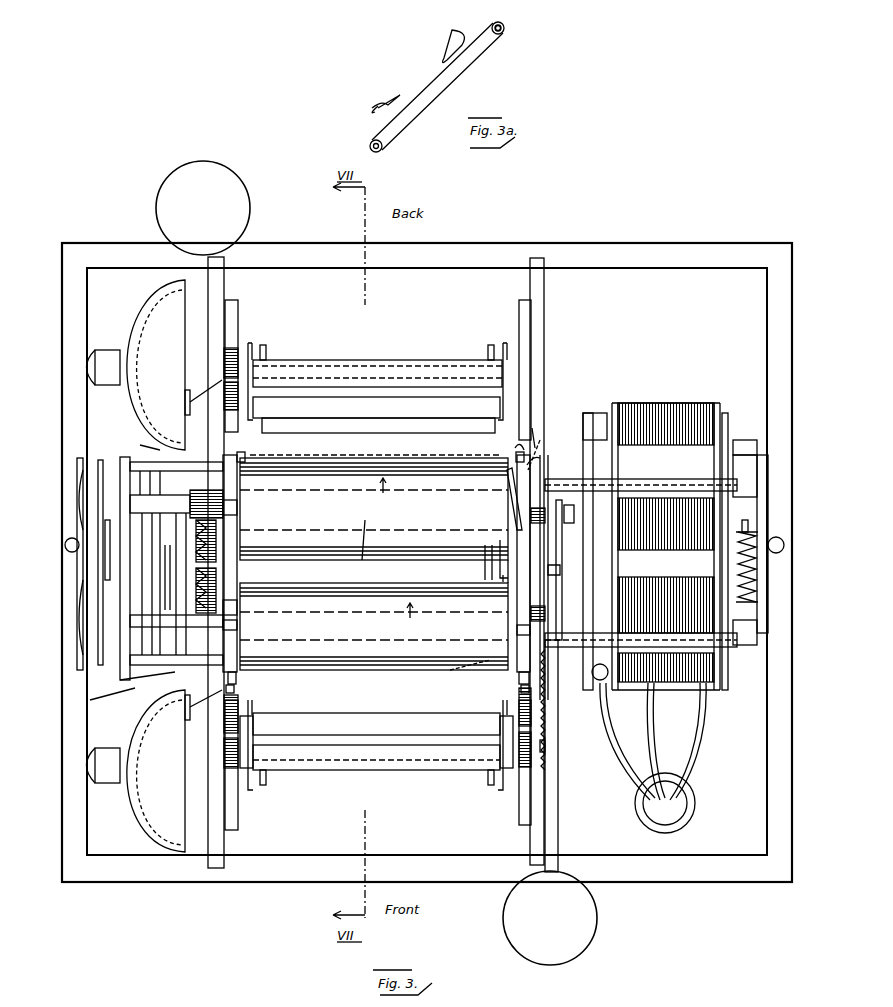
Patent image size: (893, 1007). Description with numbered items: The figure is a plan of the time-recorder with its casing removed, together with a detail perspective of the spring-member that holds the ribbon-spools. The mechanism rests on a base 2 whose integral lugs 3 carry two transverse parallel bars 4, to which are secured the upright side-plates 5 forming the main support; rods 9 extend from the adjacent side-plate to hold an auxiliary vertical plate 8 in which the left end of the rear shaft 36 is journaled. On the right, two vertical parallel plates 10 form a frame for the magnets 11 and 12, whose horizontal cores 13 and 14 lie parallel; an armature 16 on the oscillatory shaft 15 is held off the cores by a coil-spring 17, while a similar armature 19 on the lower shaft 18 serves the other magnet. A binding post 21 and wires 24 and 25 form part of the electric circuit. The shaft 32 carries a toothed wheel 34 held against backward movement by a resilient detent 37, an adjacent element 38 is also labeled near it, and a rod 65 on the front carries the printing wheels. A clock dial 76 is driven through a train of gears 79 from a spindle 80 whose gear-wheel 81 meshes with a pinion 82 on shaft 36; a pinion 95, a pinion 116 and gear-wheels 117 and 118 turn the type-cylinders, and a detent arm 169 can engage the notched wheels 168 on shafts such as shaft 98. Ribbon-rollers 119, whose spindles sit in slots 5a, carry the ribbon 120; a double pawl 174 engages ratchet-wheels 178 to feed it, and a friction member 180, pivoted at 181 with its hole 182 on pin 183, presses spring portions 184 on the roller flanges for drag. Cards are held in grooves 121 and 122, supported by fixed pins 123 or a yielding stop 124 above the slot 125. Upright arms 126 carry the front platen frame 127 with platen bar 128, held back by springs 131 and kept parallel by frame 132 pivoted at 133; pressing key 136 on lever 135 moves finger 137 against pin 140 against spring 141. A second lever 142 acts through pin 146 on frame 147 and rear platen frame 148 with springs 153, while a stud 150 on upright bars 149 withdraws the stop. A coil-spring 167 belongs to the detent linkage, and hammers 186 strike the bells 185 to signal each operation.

In FIG. 3, the base 2 is at (644, 300).
In FIG. 3, the lugs 3 is at (238, 318).
In FIG. 3, the transverse bars 4 is at (224, 292).
In FIG. 3, the side-plates 5 is at (237, 540).
In FIG. 3, the slots 5a is at (240, 627).
In FIG. 3, the auxiliary vertical plate 8 is at (122, 520).
In FIG. 3, the rods 9 is at (176, 566).
In FIG. 3, the vertical parallel plates 10 is at (728, 424).
In FIG. 3, the magnet 11 is at (666, 590).
In FIG. 3, the magnet 12 is at (667, 412).
In FIG. 3, the cores 13 is at (745, 488).
In FIG. 3, the cores 14 is at (750, 443).
In FIG. 3, the oscillatory shaft 15 is at (572, 560).
In FIG. 3, the armature 16 is at (750, 528).
In FIG. 3, the coil-spring 17 is at (758, 594).
In FIG. 3, the shaft 18 is at (572, 525).
In FIG. 3, the armature 19 is at (757, 463).
In FIG. 3, the binding post 21 is at (592, 688).
In FIG. 3, the wires 24 is at (648, 712).
In FIG. 3, the wire 25 is at (702, 728).
In FIG. 3, the shaft 32 is at (358, 534).
In FIG. 3, the toothed wheel 34 is at (500, 570).
In FIG. 3, the rear shaft 36 is at (160, 492).
In FIG. 3, the resilient detent 37 is at (485, 552).
In FIG. 3, the collar 38 is at (505, 580).
In FIG. 3, the rod 65 is at (176, 620).
In FIG. 3, the clock dial 76 is at (77, 562).
In FIG. 3, the train of gears 79 is at (100, 580).
In FIG. 3, the spindle 80 is at (173, 577).
In FIG. 3, the gear-wheel 81 is at (218, 585).
In FIG. 3, the pinion 82 is at (223, 500).
In FIG. 3, the pinion 95 is at (105, 545).
In FIG. 3, the shaft 98 is at (90, 700).
In FIG. 3, the pinion 116 is at (100, 595).
In FIG. 3, the gear-wheel 117 is at (125, 680).
In FIG. 3, the gear-wheel 118 is at (135, 450).
In FIG. 3, the ribbon-rollers 119 is at (237, 507).
In FIG. 3, the ribbon 120 is at (374, 564).
In FIG. 3, the grooves 121 is at (240, 678).
In FIG. 3, the grooves 122 is at (516, 456).
In FIG. 3, the fixed pins 123 is at (521, 689).
In FIG. 3, the yielding stop 124 is at (544, 455).
In FIG. 3, the slot 125 is at (375, 448).
In FIG. 3, the upright arms 126 is at (228, 715).
In FIG. 3, the platen frame 127 is at (253, 726).
In FIG. 3, the platen bar 128 is at (376, 741).
In FIG. 3, the springs 131 is at (266, 777).
In FIG. 3, the frame 132 is at (224, 760).
In FIG. 3, the pivot 133 is at (250, 792).
In FIG. 3, the manually-operated lever 135 is at (558, 818).
In FIG. 3, the key 136 is at (550, 918).
In FIG. 3, the finger 137 is at (548, 700).
In FIG. 3, the pin 140 is at (506, 785).
In FIG. 3, the spring 141 is at (558, 752).
In FIG. 3, the second manually-operated lever 142 is at (207, 282).
In FIG. 3, the pin 146 is at (218, 368).
In FIG. 3, the second frame 147 is at (360, 372).
In FIG. 3, the platen frame 148 is at (250, 350).
In FIG. 3, the upright bars 149 is at (224, 395).
In FIG. 3, the stud 150 is at (536, 420).
In FIG. 3, the springs 153 is at (268, 352).
In FIG. 3, the coil-spring 167 is at (218, 548).
In FIG. 3, the notched wheels 168 is at (163, 584).
In FIG. 3, the detent arm 169 is at (140, 445).
In FIG. 3, the double pawl 174 is at (560, 570).
In FIG. 3, the ratchet-wheels 178 is at (537, 500).
In FIG. 3A, the friction member 180 is at (437, 80).
In FIG. 3, the friction member 180 is at (512, 495).
In FIG. 3, the pivot 181 is at (462, 672).
In FIG. 3A, the hole 182 is at (505, 26).
In FIG. 3, the pin 183 is at (552, 428).
In FIG. 3A, the spring portions 184 is at (455, 32).
In FIG. 3, the bells 185 is at (156, 566).
In FIG. 3, the hammers 186 is at (188, 418).